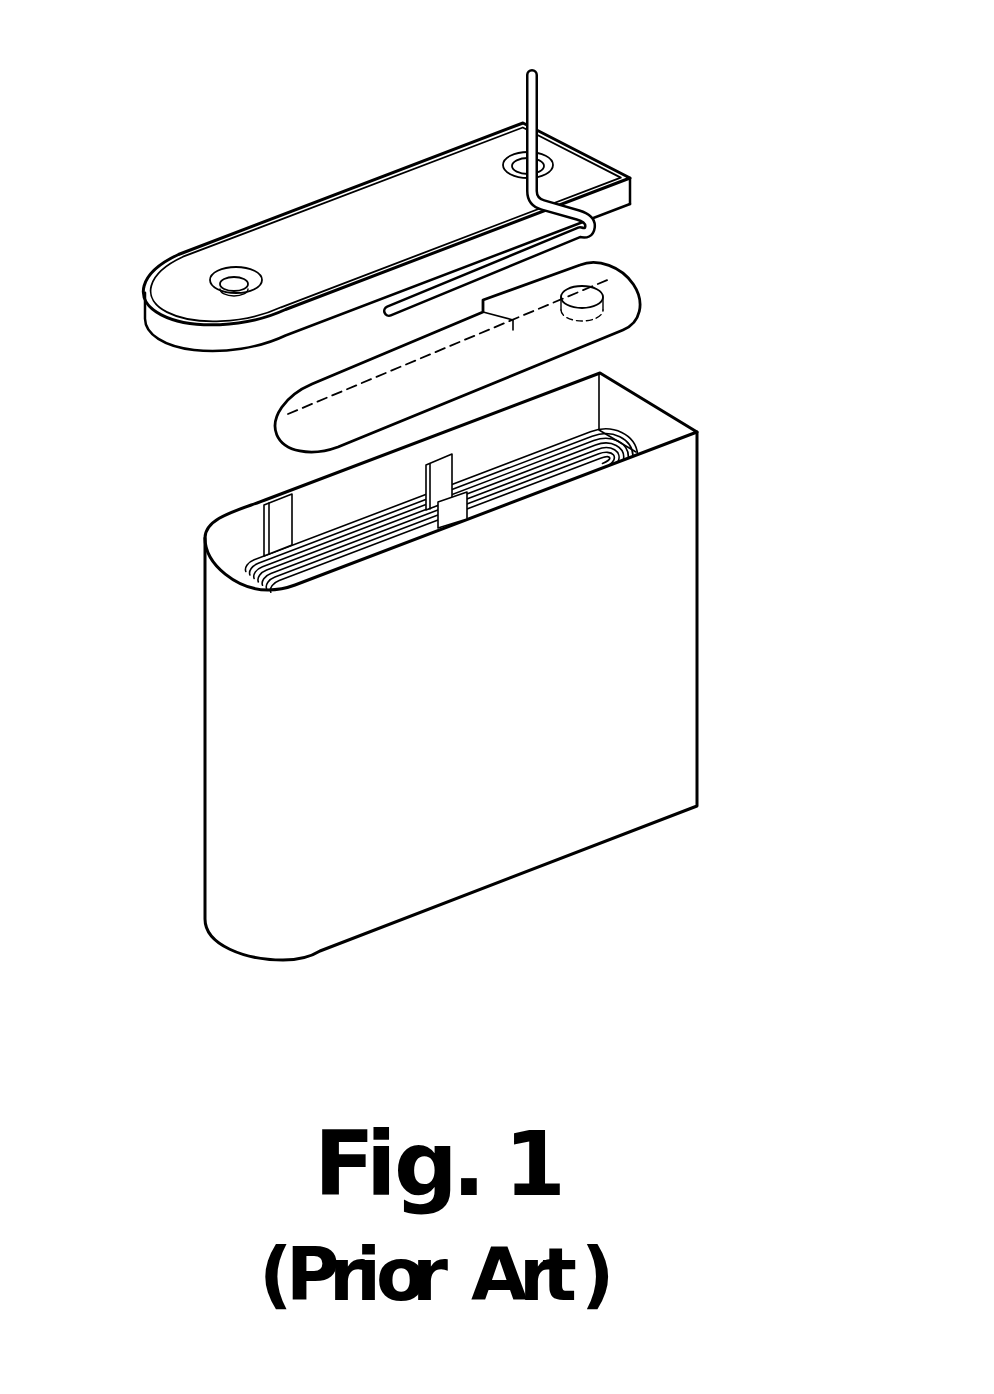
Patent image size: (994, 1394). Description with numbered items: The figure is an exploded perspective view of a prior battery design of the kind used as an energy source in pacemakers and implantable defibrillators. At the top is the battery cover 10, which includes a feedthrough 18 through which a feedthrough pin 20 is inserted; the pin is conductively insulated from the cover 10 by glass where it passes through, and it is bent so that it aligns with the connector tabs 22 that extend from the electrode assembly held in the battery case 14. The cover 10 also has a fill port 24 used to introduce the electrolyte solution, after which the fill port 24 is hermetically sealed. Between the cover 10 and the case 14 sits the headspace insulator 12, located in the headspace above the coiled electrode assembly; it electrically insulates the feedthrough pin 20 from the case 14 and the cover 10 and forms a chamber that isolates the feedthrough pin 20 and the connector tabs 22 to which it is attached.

The battery cover 10 is at (658, 150).
The headspace insulator 12 is at (330, 425).
The battery case 14 is at (697, 747).
The feedthrough 18 is at (556, 161).
The feedthrough pin 20 is at (524, 104).
The connector tabs 22 is at (280, 527).
The fill port 24 is at (231, 270).